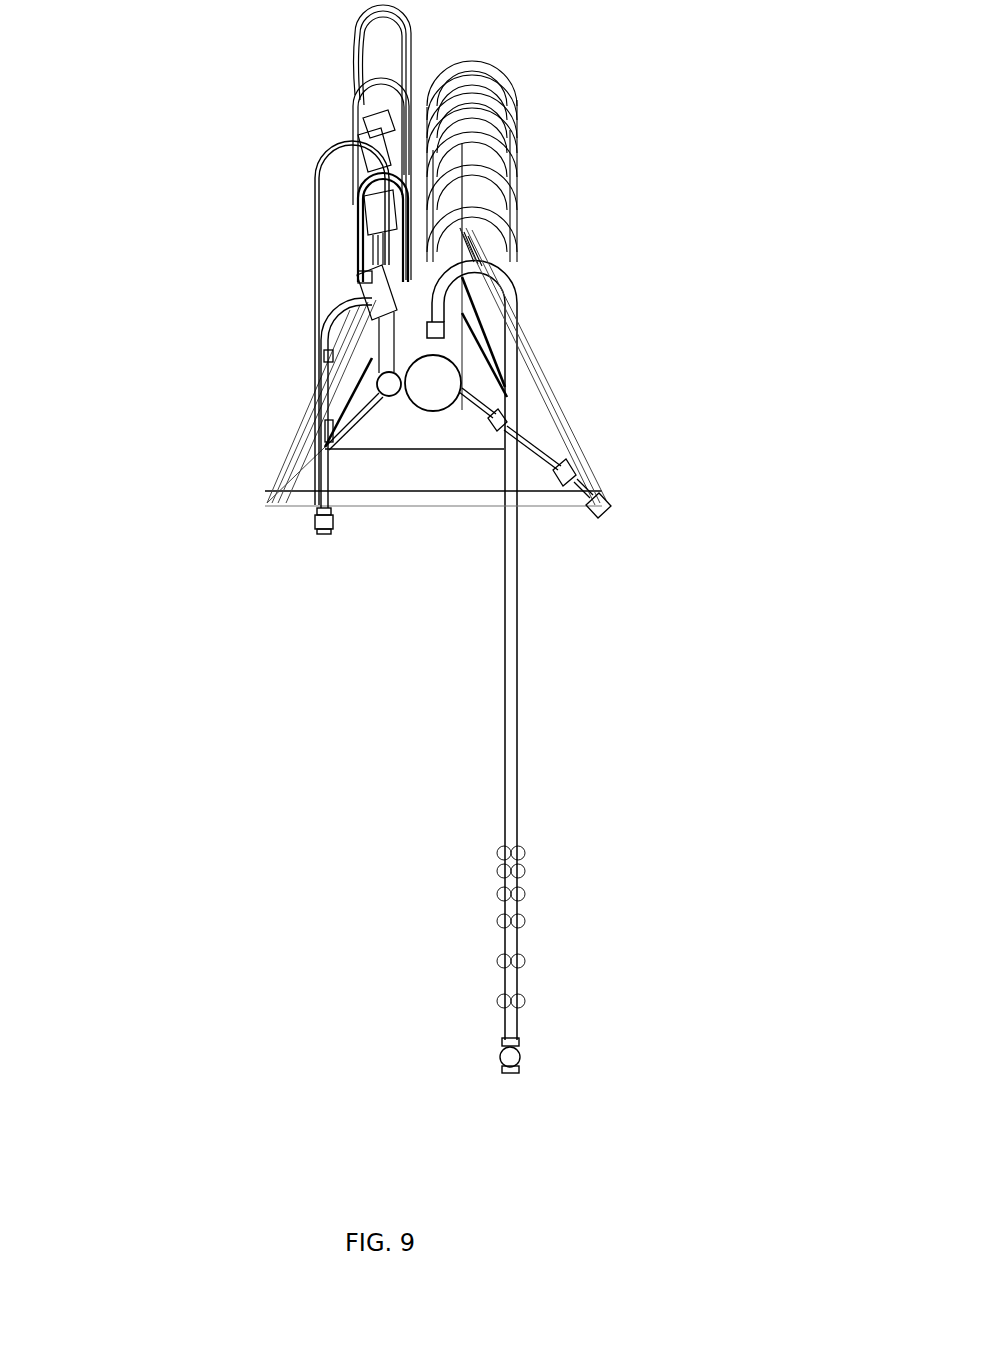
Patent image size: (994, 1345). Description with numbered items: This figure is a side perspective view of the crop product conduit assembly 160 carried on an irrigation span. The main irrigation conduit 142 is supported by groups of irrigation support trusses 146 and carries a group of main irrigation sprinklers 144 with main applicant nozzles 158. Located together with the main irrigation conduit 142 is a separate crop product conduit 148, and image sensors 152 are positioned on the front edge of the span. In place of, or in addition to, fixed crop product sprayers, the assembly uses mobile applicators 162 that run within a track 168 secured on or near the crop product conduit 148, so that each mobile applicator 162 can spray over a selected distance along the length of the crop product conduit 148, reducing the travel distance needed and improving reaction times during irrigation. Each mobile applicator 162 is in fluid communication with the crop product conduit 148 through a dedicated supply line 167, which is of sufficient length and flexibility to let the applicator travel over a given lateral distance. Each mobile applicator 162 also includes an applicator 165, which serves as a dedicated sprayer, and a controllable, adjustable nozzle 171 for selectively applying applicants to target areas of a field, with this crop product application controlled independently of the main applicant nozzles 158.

The device assembly 160 is at (573, 56).
The main irrigation sprinklers 144 is at (517, 933).
The main applicant nozzles 158 is at (517, 1065).
The controllable/adjustable nozzle 171 is at (315, 526).
The applicator 165 is at (330, 361).
The track 168 is at (335, 374).
The mobile applicators 162 is at (375, 301).
The dedicated supply lines 167 is at (366, 272).
The main irrigation conduit 142 is at (420, 393).
The crop product conduit 148 is at (392, 396).
The irrigation support trusses 146 is at (385, 495).
The image sensors 152 is at (572, 482).